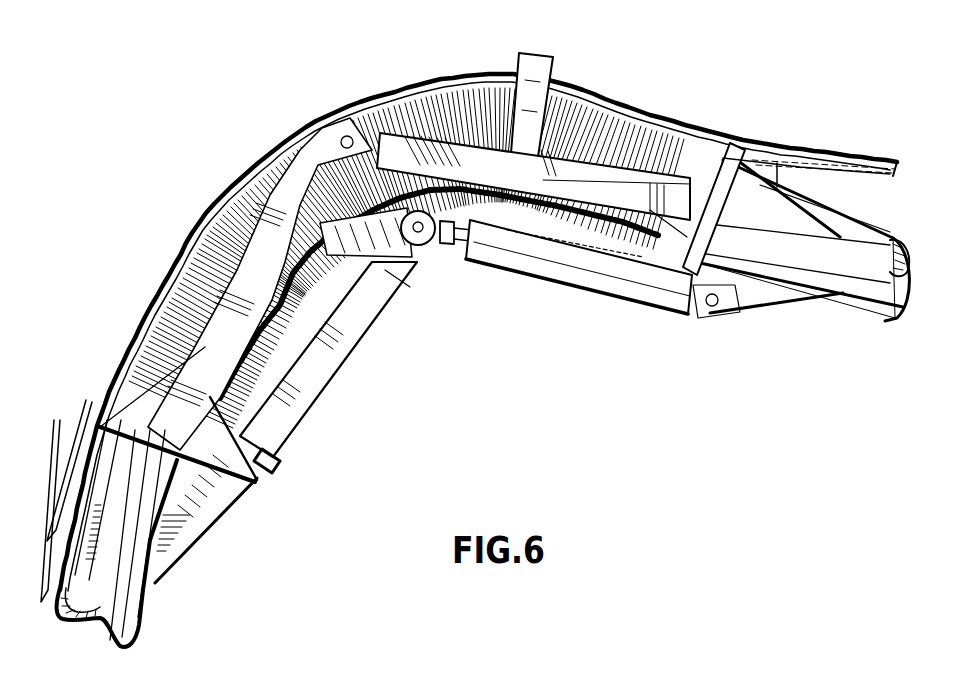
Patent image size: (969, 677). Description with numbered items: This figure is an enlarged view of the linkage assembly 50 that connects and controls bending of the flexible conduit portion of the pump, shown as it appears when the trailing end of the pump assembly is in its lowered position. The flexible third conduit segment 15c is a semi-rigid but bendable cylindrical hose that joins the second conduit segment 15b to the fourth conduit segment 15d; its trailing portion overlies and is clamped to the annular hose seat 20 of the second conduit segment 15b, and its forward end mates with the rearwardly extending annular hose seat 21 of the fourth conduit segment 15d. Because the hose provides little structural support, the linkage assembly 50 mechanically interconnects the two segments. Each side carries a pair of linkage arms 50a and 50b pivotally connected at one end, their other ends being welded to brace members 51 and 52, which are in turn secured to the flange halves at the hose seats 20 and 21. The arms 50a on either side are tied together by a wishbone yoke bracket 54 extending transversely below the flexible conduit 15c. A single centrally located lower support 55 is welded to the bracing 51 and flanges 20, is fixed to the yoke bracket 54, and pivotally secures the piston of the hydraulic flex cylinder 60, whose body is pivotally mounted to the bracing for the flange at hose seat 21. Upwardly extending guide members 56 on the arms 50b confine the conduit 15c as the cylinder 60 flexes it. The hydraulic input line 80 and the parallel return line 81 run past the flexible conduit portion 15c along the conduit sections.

The linkage assembly 50 is at (244, 130).
The linkage arm 50a is at (147, 294).
The linkage arm 50b is at (407, 140).
The second conduit segment 15b is at (144, 620).
The third conduit segment 15c is at (203, 214).
The fourth conduit segment 15d is at (884, 322).
The annular hose seat 20 is at (218, 500).
The annular hose seat 21 is at (787, 240).
The brace member 51 is at (258, 481).
The brace member 52 is at (710, 167).
The wishbone yoke bracket 54 is at (366, 244).
The lower support 55 is at (344, 350).
The guide member 56 is at (530, 70).
The hydraulic flex cylinder 60 is at (553, 277).
The hydraulic input line 80 is at (86, 434).
The return line 81 is at (80, 473).